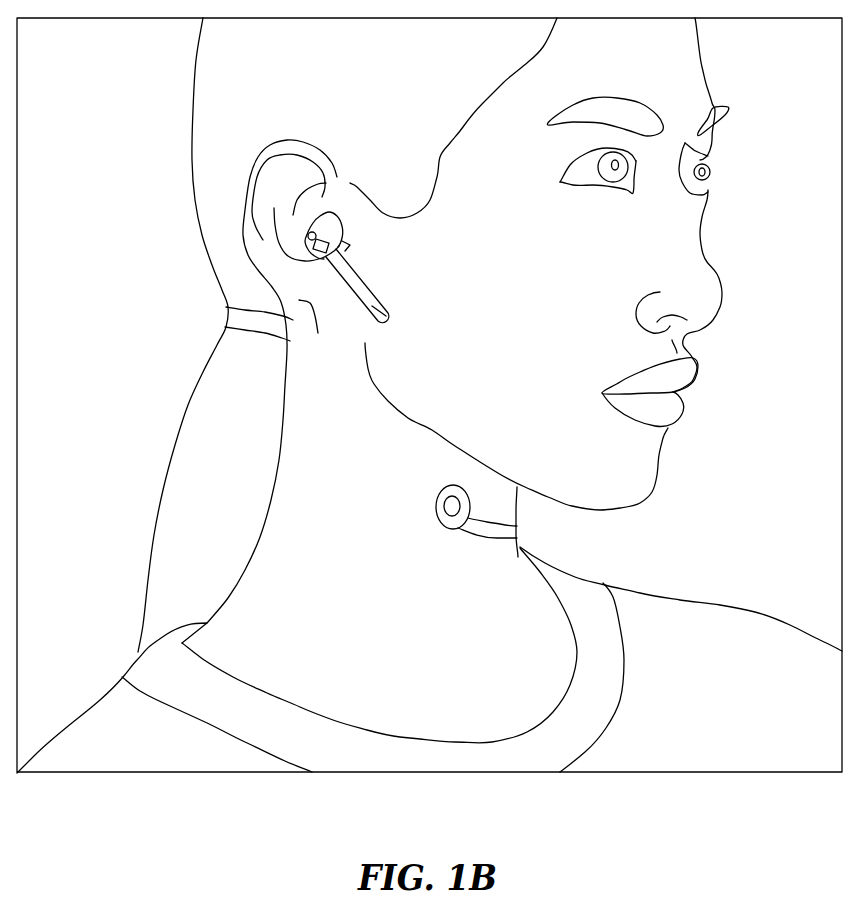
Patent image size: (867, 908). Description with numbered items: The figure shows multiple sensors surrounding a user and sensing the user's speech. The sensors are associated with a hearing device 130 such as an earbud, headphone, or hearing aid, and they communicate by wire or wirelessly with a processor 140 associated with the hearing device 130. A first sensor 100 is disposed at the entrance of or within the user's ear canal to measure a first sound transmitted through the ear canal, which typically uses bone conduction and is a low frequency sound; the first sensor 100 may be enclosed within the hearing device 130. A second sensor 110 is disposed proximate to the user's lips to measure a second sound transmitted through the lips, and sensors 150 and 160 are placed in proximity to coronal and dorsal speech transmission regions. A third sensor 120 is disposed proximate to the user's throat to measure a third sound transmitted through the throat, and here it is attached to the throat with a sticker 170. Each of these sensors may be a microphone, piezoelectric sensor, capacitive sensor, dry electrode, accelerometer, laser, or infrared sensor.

The first sensor 100 is at (222, 283).
The second sensor 110 is at (220, 356).
The third sensor 120 is at (563, 528).
The hearing device 130 is at (347, 283).
The processor 140 is at (307, 260).
The sensor 150 is at (220, 356).
The sensor 160 is at (382, 325).
The sticker 170 is at (517, 538).